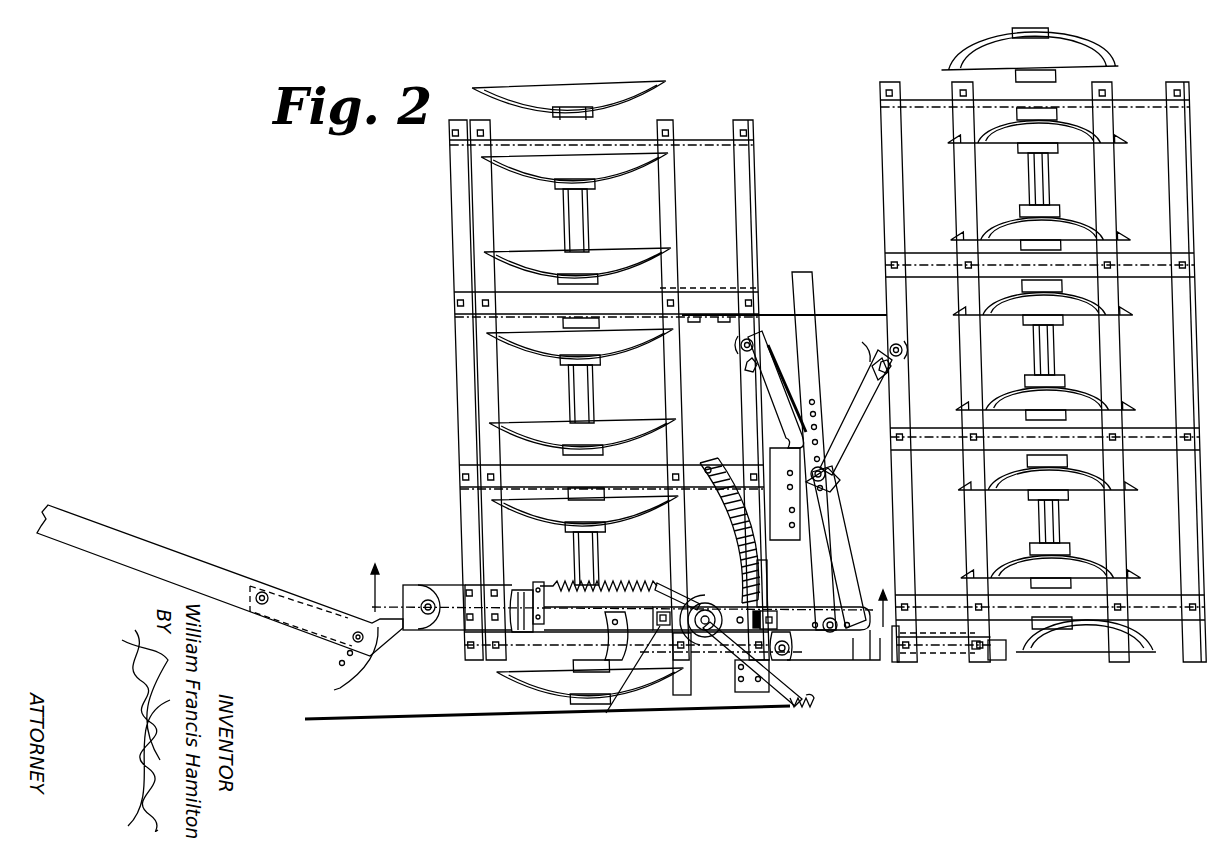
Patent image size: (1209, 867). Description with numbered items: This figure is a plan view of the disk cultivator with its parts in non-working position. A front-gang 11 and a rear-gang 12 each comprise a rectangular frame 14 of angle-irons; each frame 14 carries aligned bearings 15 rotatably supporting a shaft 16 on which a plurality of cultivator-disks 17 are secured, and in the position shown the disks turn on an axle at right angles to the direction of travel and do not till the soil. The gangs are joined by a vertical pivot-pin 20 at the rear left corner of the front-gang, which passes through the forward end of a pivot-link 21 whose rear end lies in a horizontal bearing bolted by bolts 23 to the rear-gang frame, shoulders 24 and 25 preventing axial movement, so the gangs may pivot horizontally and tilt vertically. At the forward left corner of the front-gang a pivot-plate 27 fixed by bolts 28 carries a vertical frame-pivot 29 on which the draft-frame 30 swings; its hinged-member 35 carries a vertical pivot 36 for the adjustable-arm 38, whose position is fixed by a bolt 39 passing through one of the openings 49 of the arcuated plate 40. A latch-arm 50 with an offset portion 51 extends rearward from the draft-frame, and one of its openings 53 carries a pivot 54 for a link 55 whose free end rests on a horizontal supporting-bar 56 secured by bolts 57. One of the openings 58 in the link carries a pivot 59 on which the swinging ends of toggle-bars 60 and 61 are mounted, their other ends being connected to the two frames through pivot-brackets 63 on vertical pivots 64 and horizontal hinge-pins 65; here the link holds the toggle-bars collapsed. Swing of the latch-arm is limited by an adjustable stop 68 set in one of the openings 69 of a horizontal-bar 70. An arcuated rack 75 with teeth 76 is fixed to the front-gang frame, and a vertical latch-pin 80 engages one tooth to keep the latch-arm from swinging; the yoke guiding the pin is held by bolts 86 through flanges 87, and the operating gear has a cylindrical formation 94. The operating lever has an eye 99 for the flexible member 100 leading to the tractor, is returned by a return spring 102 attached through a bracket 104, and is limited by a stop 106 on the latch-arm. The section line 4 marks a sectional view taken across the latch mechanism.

The section line 4- 4 is at (614, 608).
The front-gang 11 is at (629, 359).
The rear-gang 12 is at (884, 81).
The rectangular frame 14 is at (750, 178).
The bearings 15 is at (599, 112).
The shaft 16 is at (575, 218).
The cultivator-disks 17 is at (622, 88).
The vertical pivot-pin 20 is at (790, 658).
The pivot-link 21 is at (882, 660).
The bolts 23 is at (976, 650).
The shoulder 24 is at (900, 656).
The shoulder 25 is at (1000, 660).
The pivot-plate 27 is at (432, 585).
The bolts 28 is at (470, 590).
The vertical frame-pivot 29 is at (428, 614).
The draft-frame 30 is at (424, 591).
The hinged-member 35 is at (320, 585).
The vertical pivot 36 is at (265, 592).
The adjustable-arm 38 is at (372, 661).
The bolt 39 is at (352, 638).
The arcuated plate 40 is at (345, 655).
The openings 49 is at (342, 667).
The latch-arm 50 is at (648, 583).
The offset portion 51 is at (545, 600).
The openings 53 is at (850, 620).
The pivot 54 is at (797, 652).
The link 55 is at (838, 540).
The horizontal supporting-bar 56 is at (801, 438).
The bolts 57 is at (705, 312).
The openings 58 is at (815, 405).
The pivot 59 is at (828, 476).
The toggle-bar 60 is at (770, 400).
The toggle-bar 61 is at (862, 412).
The pivot-brackets 63 is at (740, 347).
The vertical pivots 64 is at (740, 360).
The horizontal hinge-pins 65 is at (762, 365).
The adjustable stop 68 is at (730, 523).
The openings 69 is at (788, 475).
The horizontal-bar 70 is at (740, 555).
The arcuated rack 75 is at (745, 668).
The teeth 76 is at (689, 530).
The vertical latch-pin 80 is at (735, 665).
The bolts 86 is at (605, 716).
The flanges 87 is at (770, 600).
The cylindrical formation 94 is at (706, 606).
The eye 99 is at (803, 712).
The flexible member 100 is at (560, 720).
The return spring 102 is at (605, 583).
The bracket 104 is at (515, 588).
The stop 106 is at (560, 683).